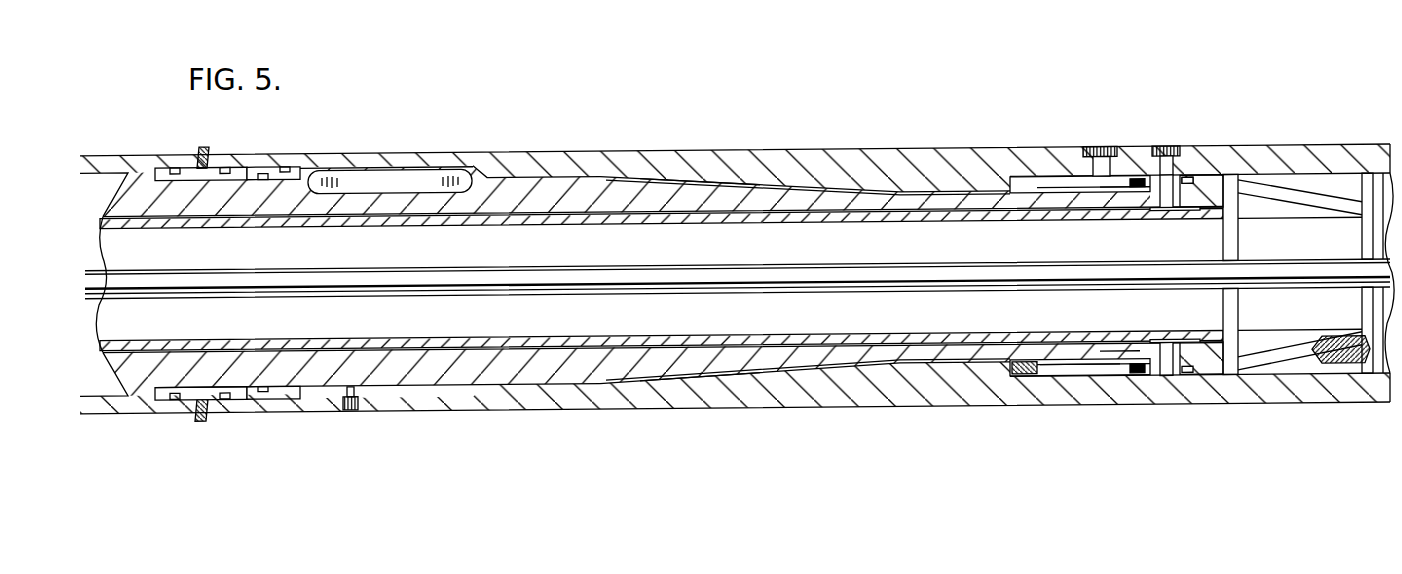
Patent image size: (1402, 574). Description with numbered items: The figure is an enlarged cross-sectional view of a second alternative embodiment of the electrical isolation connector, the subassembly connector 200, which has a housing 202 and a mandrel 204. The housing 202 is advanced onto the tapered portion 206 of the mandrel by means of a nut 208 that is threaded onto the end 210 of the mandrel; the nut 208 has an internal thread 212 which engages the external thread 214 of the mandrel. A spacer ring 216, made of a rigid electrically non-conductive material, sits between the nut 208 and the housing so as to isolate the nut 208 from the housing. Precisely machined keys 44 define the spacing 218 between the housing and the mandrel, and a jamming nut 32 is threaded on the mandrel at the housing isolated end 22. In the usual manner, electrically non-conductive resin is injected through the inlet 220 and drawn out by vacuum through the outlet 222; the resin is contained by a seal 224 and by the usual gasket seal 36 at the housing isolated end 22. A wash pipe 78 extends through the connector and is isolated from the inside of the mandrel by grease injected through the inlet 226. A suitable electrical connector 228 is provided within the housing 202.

The gasket assembly jamming nut 32 is at (165, 151).
The housing isolated end 22 is at (215, 150).
The gasket seal 36 is at (247, 156).
The keys 44 is at (392, 185).
The mandrel 204 is at (526, 202).
The housing 202 is at (596, 158).
The spacing 218 is at (691, 174).
The subassembly connector 200 is at (749, 142).
The tapered portion 206 is at (756, 188).
The spacer ring 216 is at (1020, 178).
The nut 208 is at (1057, 182).
The outlet 222 is at (1097, 147).
The external thread 214 is at (1110, 194).
The seal 224 is at (1137, 178).
The inlet 226 is at (1190, 180).
The electrical connector 228 is at (1303, 196).
The wash pipe 78 is at (668, 328).
The inlet 220 is at (351, 413).
The internal thread 212 is at (1083, 364).
The mandrel end 210 is at (1118, 352).